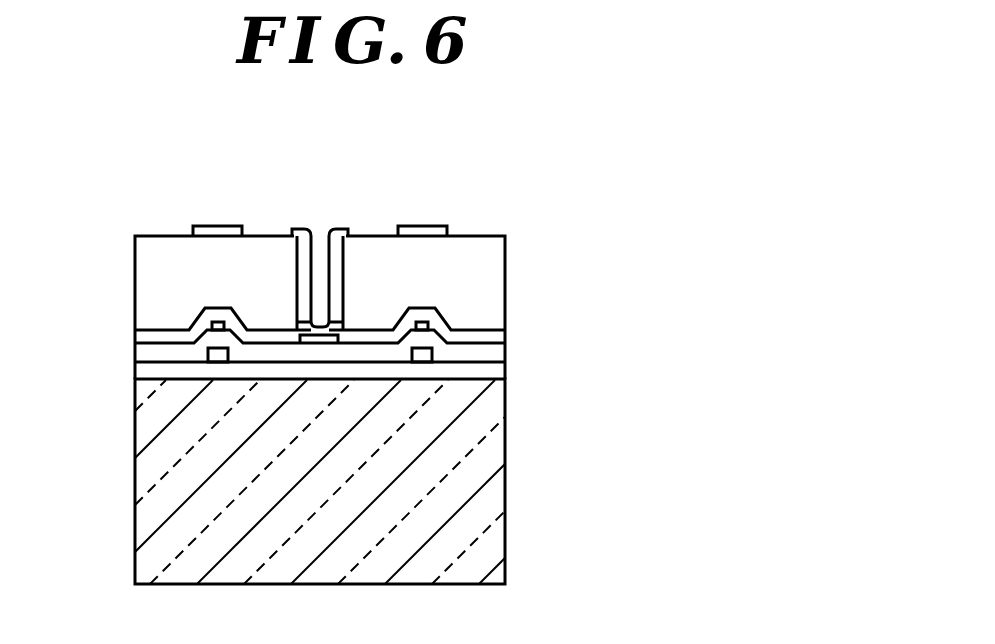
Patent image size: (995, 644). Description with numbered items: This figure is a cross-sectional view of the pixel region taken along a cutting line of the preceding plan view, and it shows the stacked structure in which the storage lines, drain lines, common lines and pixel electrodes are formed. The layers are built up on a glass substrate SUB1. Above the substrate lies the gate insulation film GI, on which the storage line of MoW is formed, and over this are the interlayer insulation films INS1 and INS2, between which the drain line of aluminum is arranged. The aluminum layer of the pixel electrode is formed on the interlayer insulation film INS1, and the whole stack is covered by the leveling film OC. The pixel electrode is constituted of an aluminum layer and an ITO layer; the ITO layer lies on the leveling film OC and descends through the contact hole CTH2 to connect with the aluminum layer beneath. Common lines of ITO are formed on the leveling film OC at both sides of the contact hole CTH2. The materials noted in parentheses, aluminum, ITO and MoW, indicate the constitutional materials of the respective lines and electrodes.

The glass substrate SUB1 is at (507, 540).
The leveling film OC is at (485, 261).
The gate insulation film GI is at (493, 368).
The interlayer insulation film INS1 is at (497, 353).
The interlayer insulation film INS2 is at (500, 338).
The contact hole CTH2 is at (323, 240).